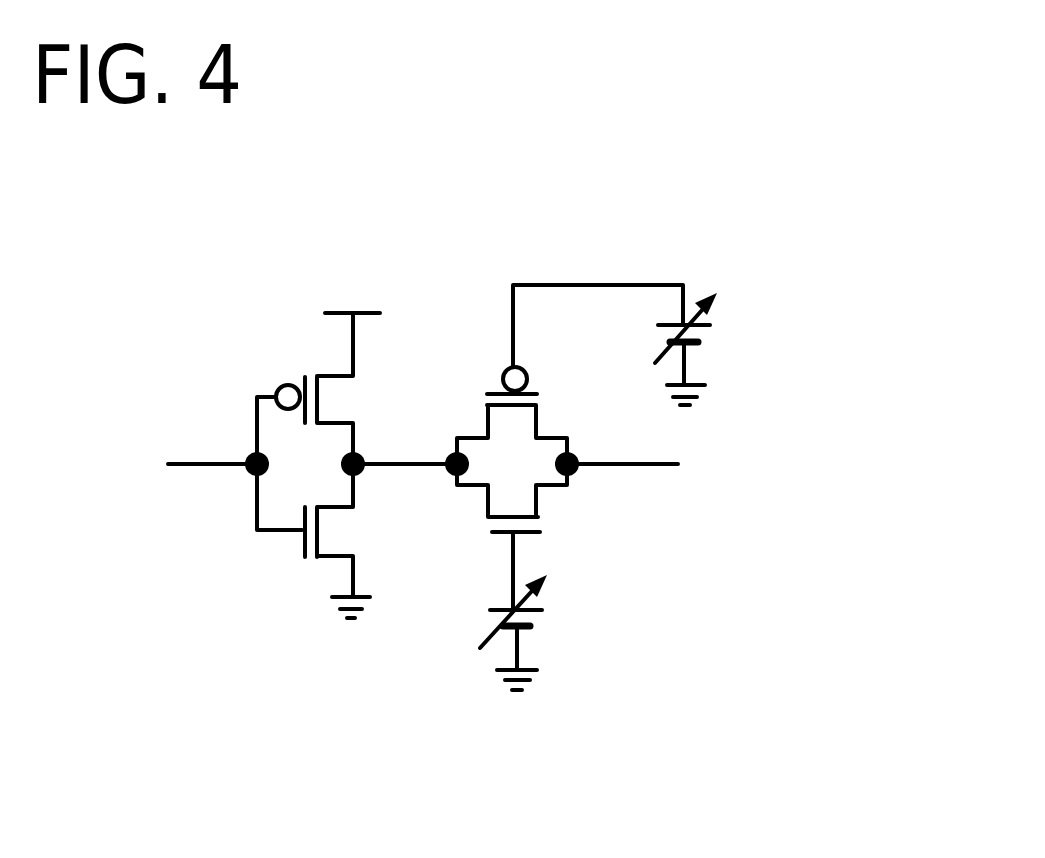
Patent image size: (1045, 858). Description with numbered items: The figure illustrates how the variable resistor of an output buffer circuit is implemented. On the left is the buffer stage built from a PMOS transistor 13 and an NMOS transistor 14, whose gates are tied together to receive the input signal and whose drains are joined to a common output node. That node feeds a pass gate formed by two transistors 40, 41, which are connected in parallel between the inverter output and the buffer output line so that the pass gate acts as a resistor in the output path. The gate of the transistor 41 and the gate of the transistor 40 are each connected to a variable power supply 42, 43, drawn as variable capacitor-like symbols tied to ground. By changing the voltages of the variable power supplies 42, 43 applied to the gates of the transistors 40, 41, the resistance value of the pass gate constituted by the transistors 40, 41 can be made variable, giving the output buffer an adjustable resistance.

The PMOS transistor 13 is at (278, 378).
The NMOS transistor 14 is at (287, 540).
The transistor 40 is at (547, 505).
The transistor 41 is at (555, 370).
The variable power supply 42 is at (718, 325).
The variable power supply 43 is at (540, 642).